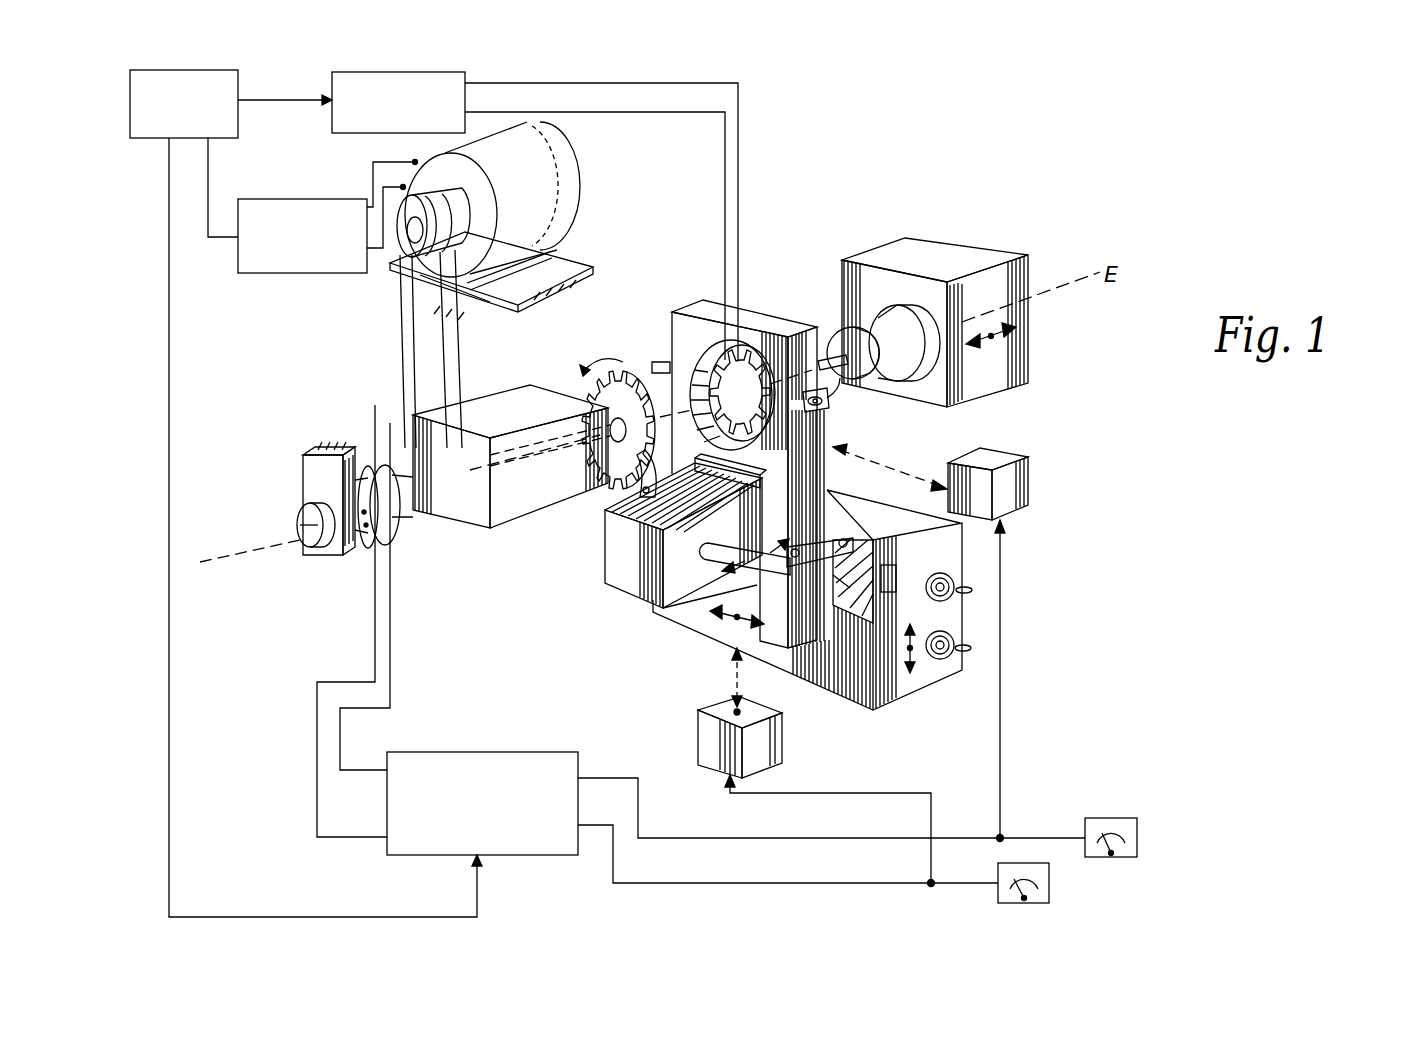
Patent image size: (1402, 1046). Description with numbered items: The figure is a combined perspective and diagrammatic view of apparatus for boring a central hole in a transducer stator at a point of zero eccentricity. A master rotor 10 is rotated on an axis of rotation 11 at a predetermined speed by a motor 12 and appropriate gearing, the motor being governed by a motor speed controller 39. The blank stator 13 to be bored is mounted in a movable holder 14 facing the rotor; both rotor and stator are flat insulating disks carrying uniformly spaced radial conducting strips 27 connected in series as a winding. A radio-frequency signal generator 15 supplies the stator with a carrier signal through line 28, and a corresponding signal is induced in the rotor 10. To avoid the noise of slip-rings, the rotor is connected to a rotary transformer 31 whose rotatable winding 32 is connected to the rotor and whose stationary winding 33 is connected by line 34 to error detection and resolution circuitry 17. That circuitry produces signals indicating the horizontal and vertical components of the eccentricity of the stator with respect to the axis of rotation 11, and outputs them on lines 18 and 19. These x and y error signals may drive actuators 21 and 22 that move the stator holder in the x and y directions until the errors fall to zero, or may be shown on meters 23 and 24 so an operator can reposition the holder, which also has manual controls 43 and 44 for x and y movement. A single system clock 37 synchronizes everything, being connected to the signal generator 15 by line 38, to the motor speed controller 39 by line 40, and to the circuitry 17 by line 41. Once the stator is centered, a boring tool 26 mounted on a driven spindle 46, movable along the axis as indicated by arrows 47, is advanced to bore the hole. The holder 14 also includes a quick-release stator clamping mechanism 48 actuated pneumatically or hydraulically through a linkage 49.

The master rotor 10 is at (620, 363).
The axis of rotation 11 is at (643, 373).
The motor 12 is at (565, 186).
The blank stator 13 is at (757, 372).
The movable holder 14 is at (738, 360).
The radio-frequency signal generator 15 is at (465, 73).
The error detection and resolution circuitry 17 is at (500, 752).
The line 18 is at (596, 778).
The line 19 is at (590, 825).
The actuator 21 is at (995, 458).
The actuator 22 is at (782, 728).
The meter 23 is at (1118, 818).
The meter 24 is at (1000, 903).
The boring tool 26 is at (840, 350).
The radial conducting strips 27 is at (615, 498).
The line 28 is at (568, 108).
The rotary transformer 31 is at (360, 558).
The rotatable winding 32 is at (375, 408).
The stationary winding 33 is at (360, 468).
The line 34 is at (377, 612).
The system clock 37 is at (130, 98).
The line 38 is at (250, 105).
The motor speed controller 39 is at (283, 200).
The line 40 is at (212, 187).
The line 41 is at (170, 292).
The manual control 43 is at (946, 573).
The manual control 44 is at (940, 660).
The driven spindle 46 is at (855, 335).
The arrows 47 is at (984, 344).
The quick-release stator clamping mechanism 48 is at (830, 396).
The linkage 49 is at (745, 553).